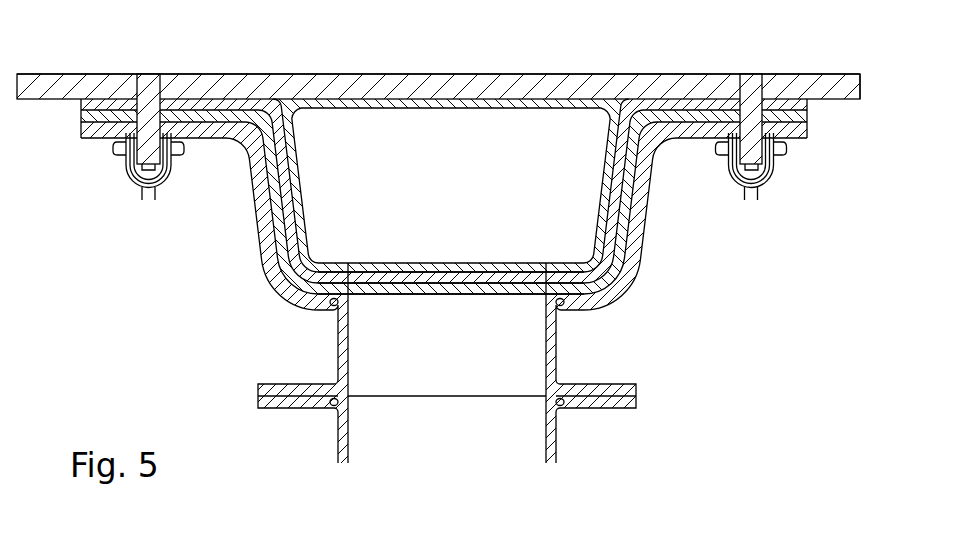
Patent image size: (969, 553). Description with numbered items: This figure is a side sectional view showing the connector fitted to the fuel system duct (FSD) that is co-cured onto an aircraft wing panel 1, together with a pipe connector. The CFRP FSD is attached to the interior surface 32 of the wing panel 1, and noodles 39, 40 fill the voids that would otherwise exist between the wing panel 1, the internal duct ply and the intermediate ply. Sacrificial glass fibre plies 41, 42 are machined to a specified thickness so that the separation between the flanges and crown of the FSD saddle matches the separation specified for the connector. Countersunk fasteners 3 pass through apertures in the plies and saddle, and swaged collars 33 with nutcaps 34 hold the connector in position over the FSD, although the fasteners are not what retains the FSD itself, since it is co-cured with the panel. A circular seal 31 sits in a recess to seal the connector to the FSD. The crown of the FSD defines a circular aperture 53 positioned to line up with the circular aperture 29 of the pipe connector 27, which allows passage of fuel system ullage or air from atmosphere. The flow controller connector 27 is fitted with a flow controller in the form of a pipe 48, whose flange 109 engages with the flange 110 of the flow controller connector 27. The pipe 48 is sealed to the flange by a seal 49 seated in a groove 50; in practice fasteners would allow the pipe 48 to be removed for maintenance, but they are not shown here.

The aircraft wing panel 1 is at (580, 98).
The fasteners 3 is at (773, 110).
The pipe connector 27 is at (627, 387).
The circular aperture 29 is at (377, 343).
The circular seal 31 is at (568, 312).
The interior surface 32 is at (850, 100).
The swaged collars 33 is at (118, 153).
The nutcaps 34 is at (136, 188).
The noodle 39 is at (289, 100).
The noodle 40 is at (650, 104).
The sacrificial glass fibre ply 41 is at (212, 124).
The sacrificial glass fibre ply 42 is at (793, 123).
The pipe 48 is at (553, 446).
The seal 49 is at (333, 408).
The groove 50 is at (541, 410).
The circular aperture 53 is at (470, 278).
The flange 109 is at (630, 400).
The flange 110 is at (262, 386).